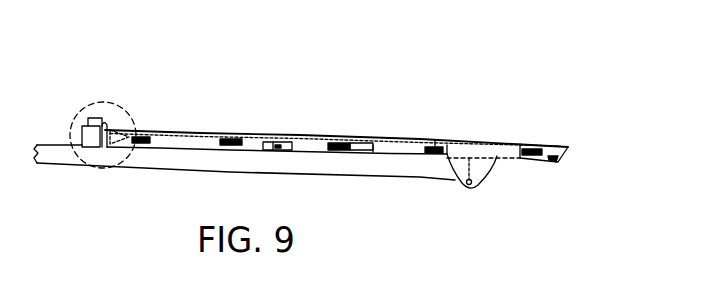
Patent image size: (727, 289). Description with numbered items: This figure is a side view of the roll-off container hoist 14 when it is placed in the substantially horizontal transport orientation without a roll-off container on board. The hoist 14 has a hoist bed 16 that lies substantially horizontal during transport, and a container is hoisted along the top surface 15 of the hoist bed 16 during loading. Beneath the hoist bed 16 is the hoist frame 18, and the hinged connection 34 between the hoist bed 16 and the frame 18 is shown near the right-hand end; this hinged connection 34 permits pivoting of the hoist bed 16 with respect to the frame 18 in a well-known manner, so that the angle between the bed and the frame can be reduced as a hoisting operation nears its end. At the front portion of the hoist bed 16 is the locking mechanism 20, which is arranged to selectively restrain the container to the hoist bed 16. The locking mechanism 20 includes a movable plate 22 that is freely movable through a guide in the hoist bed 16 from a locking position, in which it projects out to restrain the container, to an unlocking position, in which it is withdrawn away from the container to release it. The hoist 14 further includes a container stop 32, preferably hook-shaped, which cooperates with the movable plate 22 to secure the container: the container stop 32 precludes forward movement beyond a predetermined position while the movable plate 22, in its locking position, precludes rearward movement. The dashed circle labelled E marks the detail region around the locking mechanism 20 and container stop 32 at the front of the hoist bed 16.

The roll-off container hoist 14 is at (572, 141).
The top surface 15 is at (247, 133).
The hoist bed 16 is at (326, 137).
The hoist frame 18 is at (145, 170).
The locking mechanism 20 is at (120, 116).
The movable plate 22 is at (102, 128).
The container stop 32 is at (92, 117).
The hinged connection 34 is at (485, 172).
The detail area E is at (115, 102).